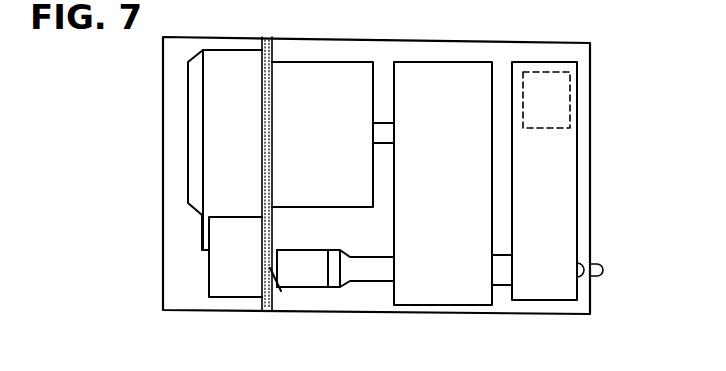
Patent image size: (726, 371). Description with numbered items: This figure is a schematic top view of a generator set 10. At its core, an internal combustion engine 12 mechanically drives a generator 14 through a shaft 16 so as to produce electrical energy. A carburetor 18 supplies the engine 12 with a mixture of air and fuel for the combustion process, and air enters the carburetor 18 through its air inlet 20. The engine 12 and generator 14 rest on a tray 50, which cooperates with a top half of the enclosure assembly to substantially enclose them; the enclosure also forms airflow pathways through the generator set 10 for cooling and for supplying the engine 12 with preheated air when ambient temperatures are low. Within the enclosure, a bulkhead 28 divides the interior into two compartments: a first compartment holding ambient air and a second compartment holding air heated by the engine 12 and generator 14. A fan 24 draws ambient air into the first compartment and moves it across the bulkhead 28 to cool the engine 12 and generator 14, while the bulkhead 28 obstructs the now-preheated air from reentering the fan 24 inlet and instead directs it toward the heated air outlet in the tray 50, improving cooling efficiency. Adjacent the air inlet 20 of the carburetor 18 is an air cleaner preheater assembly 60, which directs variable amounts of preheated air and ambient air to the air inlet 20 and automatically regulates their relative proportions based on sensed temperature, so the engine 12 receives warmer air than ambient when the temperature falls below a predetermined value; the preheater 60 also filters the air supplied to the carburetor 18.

The generator set 10 is at (118, 191).
The internal combustion engine 12 is at (478, 207).
The generator 14 is at (340, 80).
The shaft 16 is at (387, 130).
The carburetor 18 is at (308, 273).
The air inlet 20 is at (282, 288).
The fan 24 is at (215, 89).
The bulkhead 28 is at (275, 52).
The tray 50 is at (577, 62).
The air cleaner preheater assembly 60 is at (237, 277).